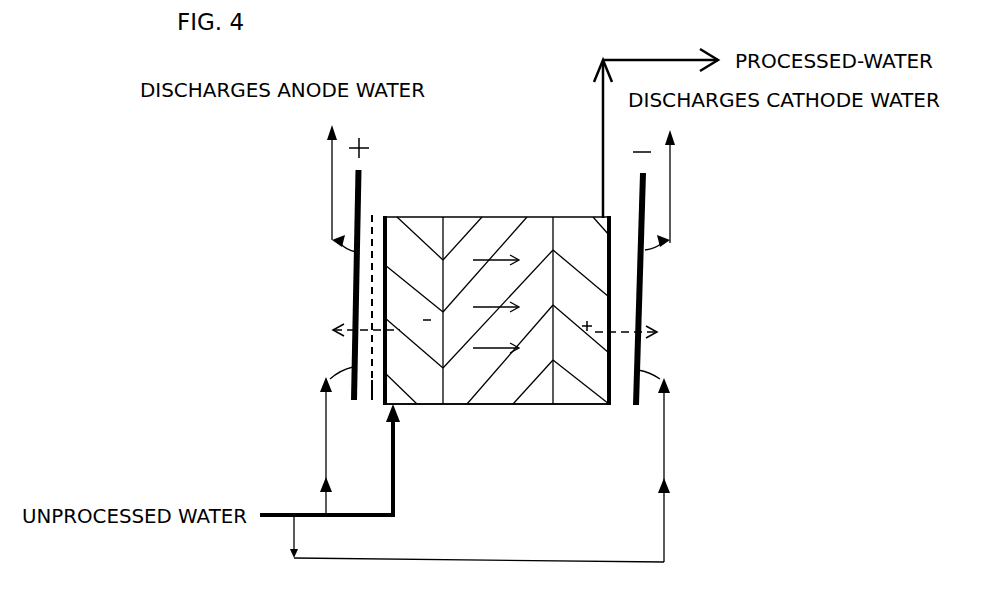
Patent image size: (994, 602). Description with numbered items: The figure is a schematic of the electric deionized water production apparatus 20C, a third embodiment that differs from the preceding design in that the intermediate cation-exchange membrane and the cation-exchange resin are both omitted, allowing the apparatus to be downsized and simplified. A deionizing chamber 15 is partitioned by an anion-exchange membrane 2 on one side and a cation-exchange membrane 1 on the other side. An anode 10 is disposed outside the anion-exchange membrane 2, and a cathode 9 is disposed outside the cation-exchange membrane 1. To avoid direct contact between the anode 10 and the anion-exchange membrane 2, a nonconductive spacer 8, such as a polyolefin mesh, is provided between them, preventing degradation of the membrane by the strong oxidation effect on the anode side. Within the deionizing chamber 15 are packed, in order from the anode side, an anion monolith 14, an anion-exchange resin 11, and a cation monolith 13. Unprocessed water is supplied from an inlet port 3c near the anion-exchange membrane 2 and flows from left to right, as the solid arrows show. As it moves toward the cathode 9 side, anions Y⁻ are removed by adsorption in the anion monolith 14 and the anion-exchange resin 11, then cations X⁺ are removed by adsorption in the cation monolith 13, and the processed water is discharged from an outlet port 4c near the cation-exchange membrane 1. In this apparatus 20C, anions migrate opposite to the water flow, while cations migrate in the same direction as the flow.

The electric deionized water production apparatus 20C is at (547, 72).
The cation-exchange membrane 1 is at (607, 407).
The anion-exchange membrane 2 is at (368, 403).
The inlet port 3c is at (385, 410).
The outlet port 4c is at (592, 217).
The nonconductive spacer 8 is at (378, 207).
The cathode 9 is at (645, 318).
The anode 10 is at (352, 300).
The anion-exchange resin 11 is at (500, 217).
The cation monolith 13 is at (560, 217).
The anion monolith 14 is at (420, 217).
The deionizing chamber 15 is at (500, 405).